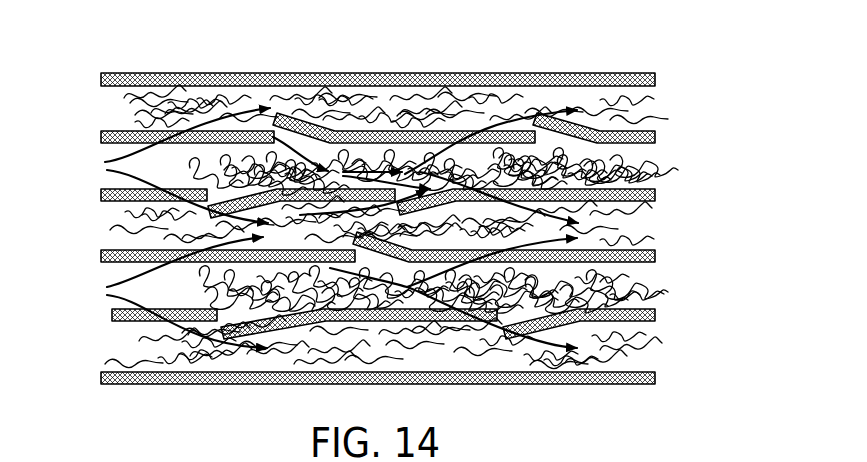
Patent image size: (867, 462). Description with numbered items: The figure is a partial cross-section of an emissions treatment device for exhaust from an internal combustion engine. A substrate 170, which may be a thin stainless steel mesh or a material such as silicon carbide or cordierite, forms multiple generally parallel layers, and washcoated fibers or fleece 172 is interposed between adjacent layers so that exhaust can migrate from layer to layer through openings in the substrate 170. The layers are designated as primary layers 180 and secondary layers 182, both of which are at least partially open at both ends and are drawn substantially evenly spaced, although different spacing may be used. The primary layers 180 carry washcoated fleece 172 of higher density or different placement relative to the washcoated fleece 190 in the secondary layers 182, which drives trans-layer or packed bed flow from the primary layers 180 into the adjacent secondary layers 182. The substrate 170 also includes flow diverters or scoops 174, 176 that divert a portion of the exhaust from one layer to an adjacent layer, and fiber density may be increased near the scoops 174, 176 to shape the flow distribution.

The substrate 170 is at (655, 78).
The washcoated fibers or fleece 172 is at (648, 173).
The flow diverter or scoop 174 is at (547, 330).
The flow diverter or scoop 176 is at (303, 123).
The primary layers 180 is at (93, 163).
The secondary layers 182 is at (93, 110).
The washcoated fleece 190 is at (632, 227).